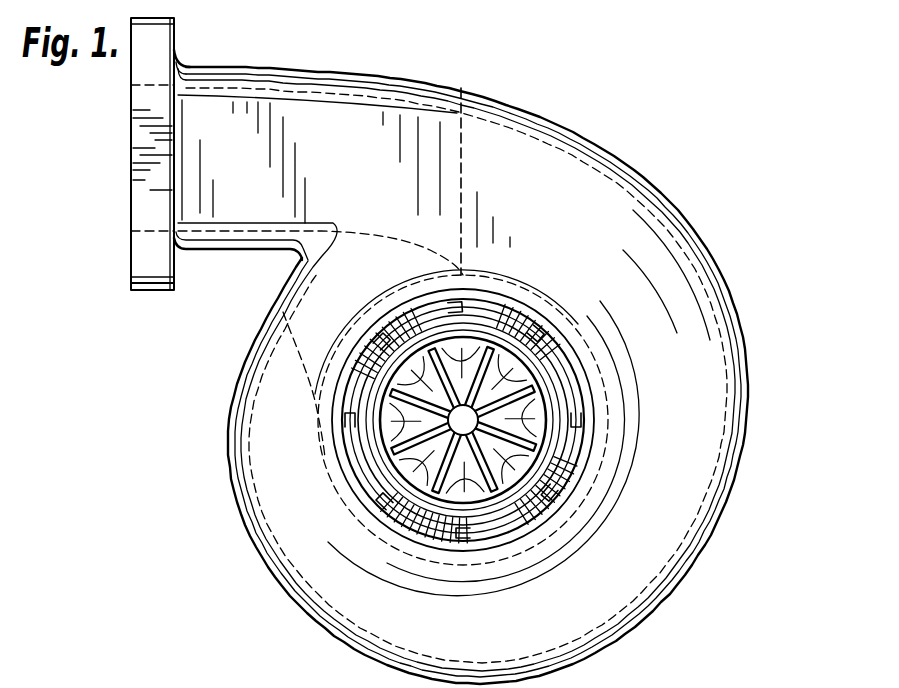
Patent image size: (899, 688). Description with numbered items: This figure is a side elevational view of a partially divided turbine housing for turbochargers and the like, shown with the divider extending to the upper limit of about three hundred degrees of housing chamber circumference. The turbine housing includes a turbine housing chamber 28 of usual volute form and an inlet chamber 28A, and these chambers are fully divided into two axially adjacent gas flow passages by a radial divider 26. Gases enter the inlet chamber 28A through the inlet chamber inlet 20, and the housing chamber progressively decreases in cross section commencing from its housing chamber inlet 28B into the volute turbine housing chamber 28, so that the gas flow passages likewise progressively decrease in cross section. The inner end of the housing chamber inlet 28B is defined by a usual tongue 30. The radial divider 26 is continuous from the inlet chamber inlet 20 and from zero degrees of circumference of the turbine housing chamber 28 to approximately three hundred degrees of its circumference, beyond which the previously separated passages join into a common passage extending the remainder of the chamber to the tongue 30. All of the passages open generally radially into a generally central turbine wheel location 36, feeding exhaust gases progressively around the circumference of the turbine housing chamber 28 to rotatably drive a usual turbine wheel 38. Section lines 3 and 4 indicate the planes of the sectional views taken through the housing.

The inlet chamber inlet 20 is at (122, 160).
The radial divider 26 is at (672, 506).
The turbine housing chamber 28 is at (700, 396).
The inlet chamber 28A is at (331, 148).
The housing chamber inlet 28B is at (463, 158).
The tongue 30 is at (462, 272).
The turbine wheel location 36 is at (405, 462).
The turbine wheel 38 is at (398, 433).
The section line 3- 3 is at (108, 224).
The section line 4- 4 is at (285, 290).